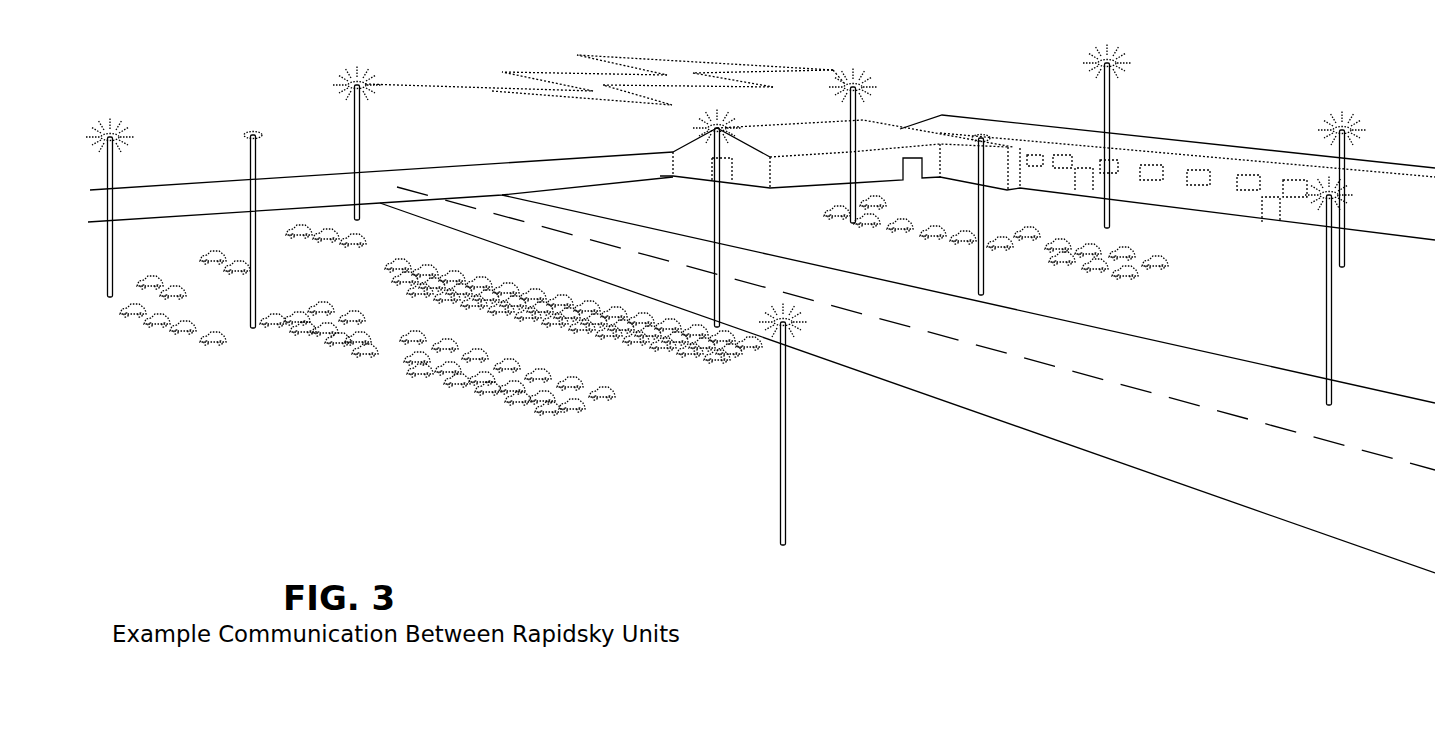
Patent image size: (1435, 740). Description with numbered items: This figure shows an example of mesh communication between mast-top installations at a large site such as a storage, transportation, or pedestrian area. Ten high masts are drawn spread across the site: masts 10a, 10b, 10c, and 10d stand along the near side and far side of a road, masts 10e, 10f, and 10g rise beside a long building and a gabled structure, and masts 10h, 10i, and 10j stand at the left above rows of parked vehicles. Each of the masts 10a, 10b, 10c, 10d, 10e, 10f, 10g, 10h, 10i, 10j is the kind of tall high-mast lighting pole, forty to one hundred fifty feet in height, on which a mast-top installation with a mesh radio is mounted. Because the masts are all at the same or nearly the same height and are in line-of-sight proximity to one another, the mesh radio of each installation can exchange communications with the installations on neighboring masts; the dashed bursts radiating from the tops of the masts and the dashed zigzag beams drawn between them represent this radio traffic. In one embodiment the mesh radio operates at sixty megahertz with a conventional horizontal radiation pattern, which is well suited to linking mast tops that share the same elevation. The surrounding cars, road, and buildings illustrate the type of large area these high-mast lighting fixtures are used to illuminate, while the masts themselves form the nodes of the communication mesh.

The mast 10a is at (1333, 314).
The mast 10b is at (787, 437).
The mast 10c is at (1345, 212).
The mast 10d is at (985, 285).
The mast 10e is at (1110, 100).
The mast 10f is at (721, 213).
The mast 10g is at (856, 110).
The mast 10h is at (360, 121).
The mast 10i is at (256, 154).
The mast 10j is at (113, 243).